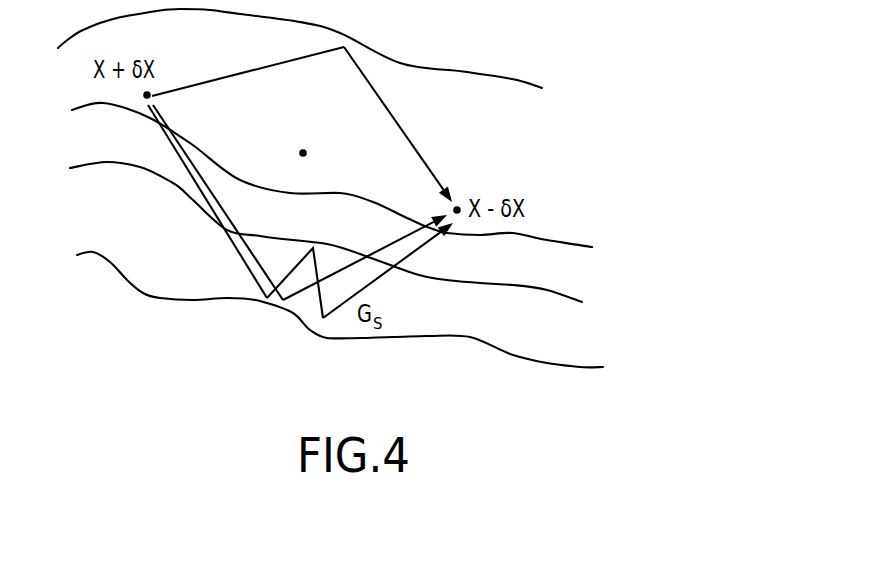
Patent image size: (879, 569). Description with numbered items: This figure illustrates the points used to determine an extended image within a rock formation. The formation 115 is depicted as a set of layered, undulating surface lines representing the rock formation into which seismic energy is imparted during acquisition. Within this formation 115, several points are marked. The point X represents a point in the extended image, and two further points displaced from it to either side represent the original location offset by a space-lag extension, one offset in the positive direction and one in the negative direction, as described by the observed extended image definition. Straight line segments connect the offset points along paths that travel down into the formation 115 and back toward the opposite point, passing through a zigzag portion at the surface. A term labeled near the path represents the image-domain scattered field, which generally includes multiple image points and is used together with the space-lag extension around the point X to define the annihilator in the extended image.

The formation 115 is at (618, 89).
The point in the extended image X is at (304, 139).